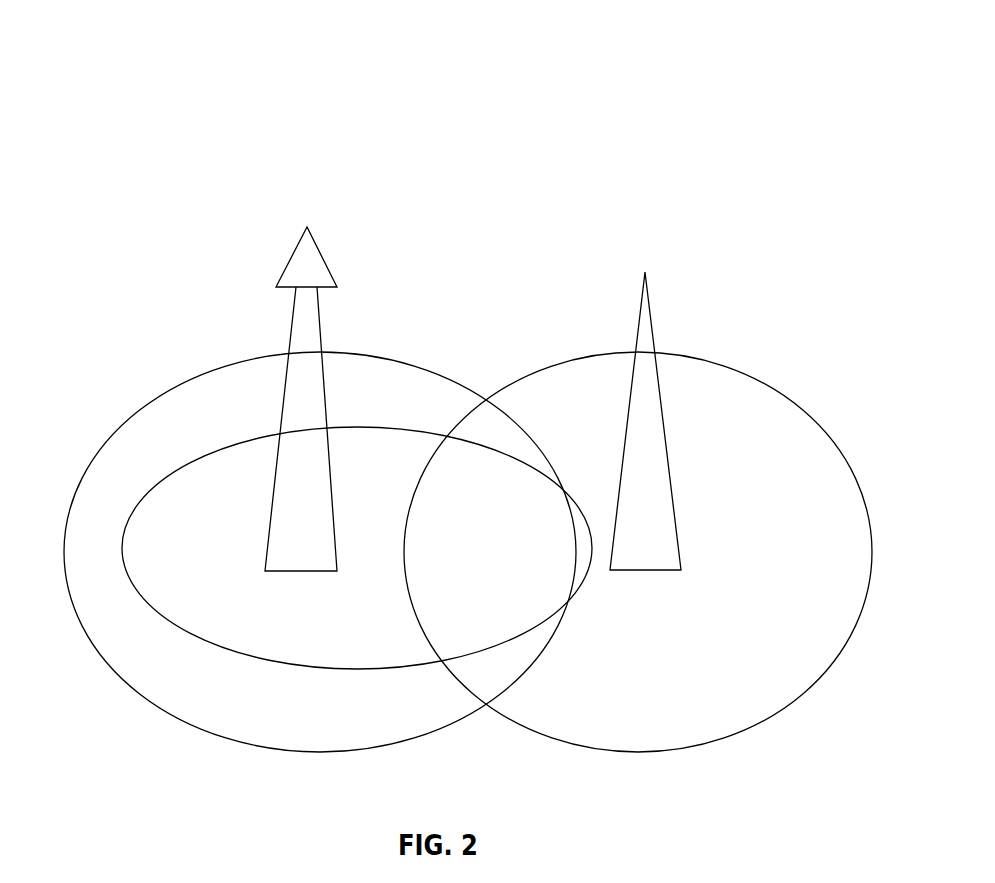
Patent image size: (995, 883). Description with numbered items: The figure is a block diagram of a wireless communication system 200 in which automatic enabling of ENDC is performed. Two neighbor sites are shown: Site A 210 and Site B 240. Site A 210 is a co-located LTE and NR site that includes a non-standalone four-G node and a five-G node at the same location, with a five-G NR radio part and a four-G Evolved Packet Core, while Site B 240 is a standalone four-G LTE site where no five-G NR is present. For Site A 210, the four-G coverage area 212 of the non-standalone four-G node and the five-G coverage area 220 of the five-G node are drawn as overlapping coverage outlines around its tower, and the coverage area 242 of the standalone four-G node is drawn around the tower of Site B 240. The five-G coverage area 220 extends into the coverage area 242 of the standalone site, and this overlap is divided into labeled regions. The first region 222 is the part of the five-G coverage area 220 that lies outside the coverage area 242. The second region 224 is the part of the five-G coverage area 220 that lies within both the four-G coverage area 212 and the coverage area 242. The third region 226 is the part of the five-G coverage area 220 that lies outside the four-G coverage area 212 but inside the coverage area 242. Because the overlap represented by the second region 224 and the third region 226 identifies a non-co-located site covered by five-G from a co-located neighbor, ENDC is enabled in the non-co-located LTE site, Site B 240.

The wireless communication system 200 is at (99, 30).
The Site A 210 is at (305, 129).
The 4G coverage area 212 is at (366, 360).
The 5G coverage area 220 is at (396, 425).
The region R1 222 is at (382, 574).
The region R2 224 is at (471, 574).
The region R3 226 is at (561, 574).
The Site B 240 is at (638, 182).
The coverage area 242 is at (719, 361).